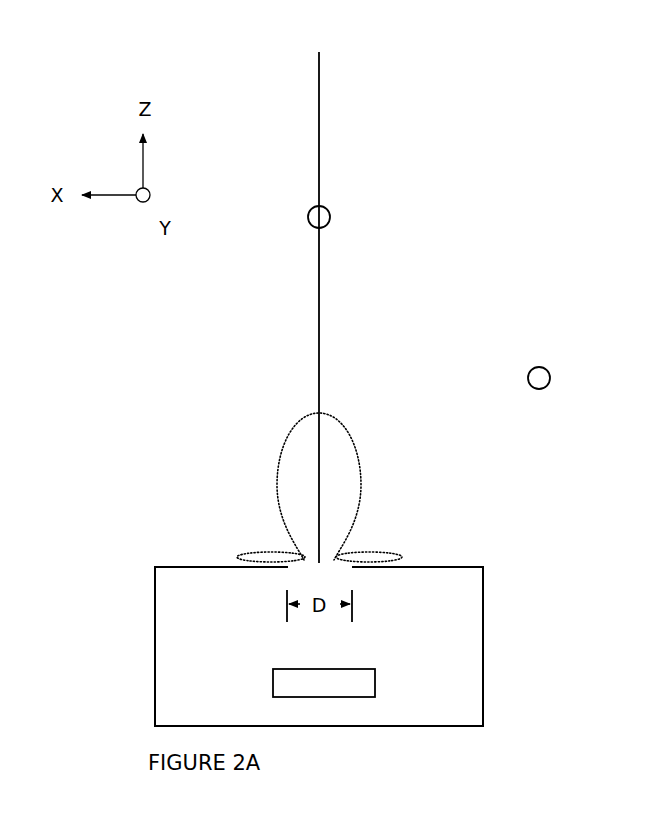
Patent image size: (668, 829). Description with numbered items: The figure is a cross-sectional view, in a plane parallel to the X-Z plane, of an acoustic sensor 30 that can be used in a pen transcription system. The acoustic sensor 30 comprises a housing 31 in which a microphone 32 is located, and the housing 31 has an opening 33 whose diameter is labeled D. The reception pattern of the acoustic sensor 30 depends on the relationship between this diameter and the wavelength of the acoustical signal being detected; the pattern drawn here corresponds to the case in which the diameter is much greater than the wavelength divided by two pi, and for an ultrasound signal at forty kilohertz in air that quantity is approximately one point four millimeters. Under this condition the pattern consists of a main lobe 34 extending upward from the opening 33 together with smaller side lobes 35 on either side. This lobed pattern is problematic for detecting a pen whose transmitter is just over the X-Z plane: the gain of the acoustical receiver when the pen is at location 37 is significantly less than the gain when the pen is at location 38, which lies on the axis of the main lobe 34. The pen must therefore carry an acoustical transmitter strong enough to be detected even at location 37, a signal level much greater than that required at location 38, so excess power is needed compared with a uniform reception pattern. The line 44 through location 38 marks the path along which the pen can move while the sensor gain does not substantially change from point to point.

The acoustic sensor 30 is at (117, 442).
The housing 31 is at (484, 578).
The microphone 32 is at (370, 681).
The opening 33 is at (317, 571).
The main lobe 34 is at (358, 458).
The side lobes 35 is at (384, 553).
The pen location 37 is at (550, 375).
The pen location 38 is at (330, 216).
The line 44 is at (319, 98).